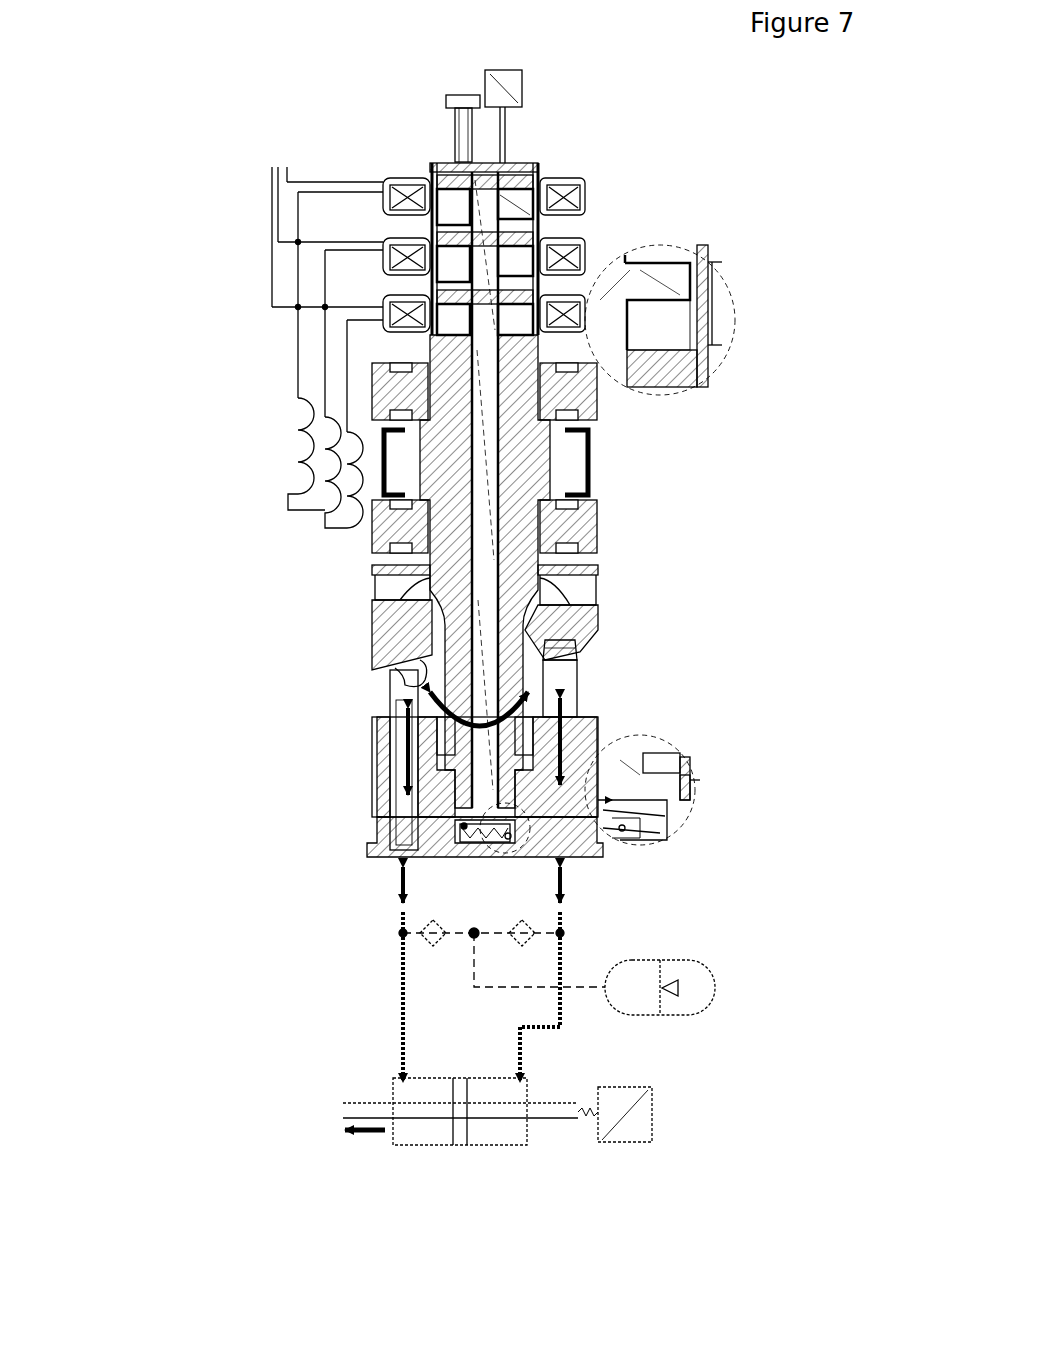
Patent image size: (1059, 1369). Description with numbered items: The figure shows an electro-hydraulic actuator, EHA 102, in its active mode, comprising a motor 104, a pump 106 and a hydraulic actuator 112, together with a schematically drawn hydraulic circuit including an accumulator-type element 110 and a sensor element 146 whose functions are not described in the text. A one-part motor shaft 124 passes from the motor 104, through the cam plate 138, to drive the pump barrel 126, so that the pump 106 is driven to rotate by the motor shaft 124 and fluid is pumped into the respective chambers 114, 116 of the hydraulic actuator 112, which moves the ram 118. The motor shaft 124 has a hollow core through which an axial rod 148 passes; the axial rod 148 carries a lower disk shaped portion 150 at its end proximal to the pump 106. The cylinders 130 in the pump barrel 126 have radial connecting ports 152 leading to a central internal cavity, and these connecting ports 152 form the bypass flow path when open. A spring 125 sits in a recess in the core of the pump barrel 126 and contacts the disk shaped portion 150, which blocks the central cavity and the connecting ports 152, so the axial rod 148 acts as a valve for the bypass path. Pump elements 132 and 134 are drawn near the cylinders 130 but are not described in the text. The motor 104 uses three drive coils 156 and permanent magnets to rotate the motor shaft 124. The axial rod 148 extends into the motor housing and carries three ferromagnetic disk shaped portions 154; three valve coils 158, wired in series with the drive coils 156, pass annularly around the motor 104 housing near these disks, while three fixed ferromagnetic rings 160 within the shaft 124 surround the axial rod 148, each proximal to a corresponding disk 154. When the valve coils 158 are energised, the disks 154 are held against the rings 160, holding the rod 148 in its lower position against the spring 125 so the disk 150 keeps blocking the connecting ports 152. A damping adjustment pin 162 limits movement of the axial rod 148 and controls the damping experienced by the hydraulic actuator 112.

The EHA 102 is at (210, 135).
The motor 104 is at (180, 438).
The pump 106 is at (150, 775).
The accumulator 110 is at (650, 972).
The hydraulic actuator 112 is at (468, 1163).
The chamber 114 is at (618, 1108).
The chamber 116 is at (495, 1130).
The ram 118 is at (395, 1105).
The motor shaft 124 is at (505, 748).
The spring 125 is at (400, 880).
The pump barrel 126 is at (575, 758).
The cylinders 130 is at (400, 840).
The valve pin 132 is at (405, 735).
The plunger 134 is at (577, 640).
The cam plate 138 is at (600, 600).
The voltage sensor 146 is at (527, 100).
The axial rod 148 is at (440, 628).
The lower disk shaped portion 150 is at (400, 817).
The connecting ports 152 is at (690, 790).
The ferromagnetic disk shaped portions 154 is at (440, 195).
The drive coils 156 is at (323, 505).
The valve coils 158 is at (528, 200).
The ferromagnetic rings 160 is at (520, 205).
The damping adjustment pin 162 is at (462, 150).